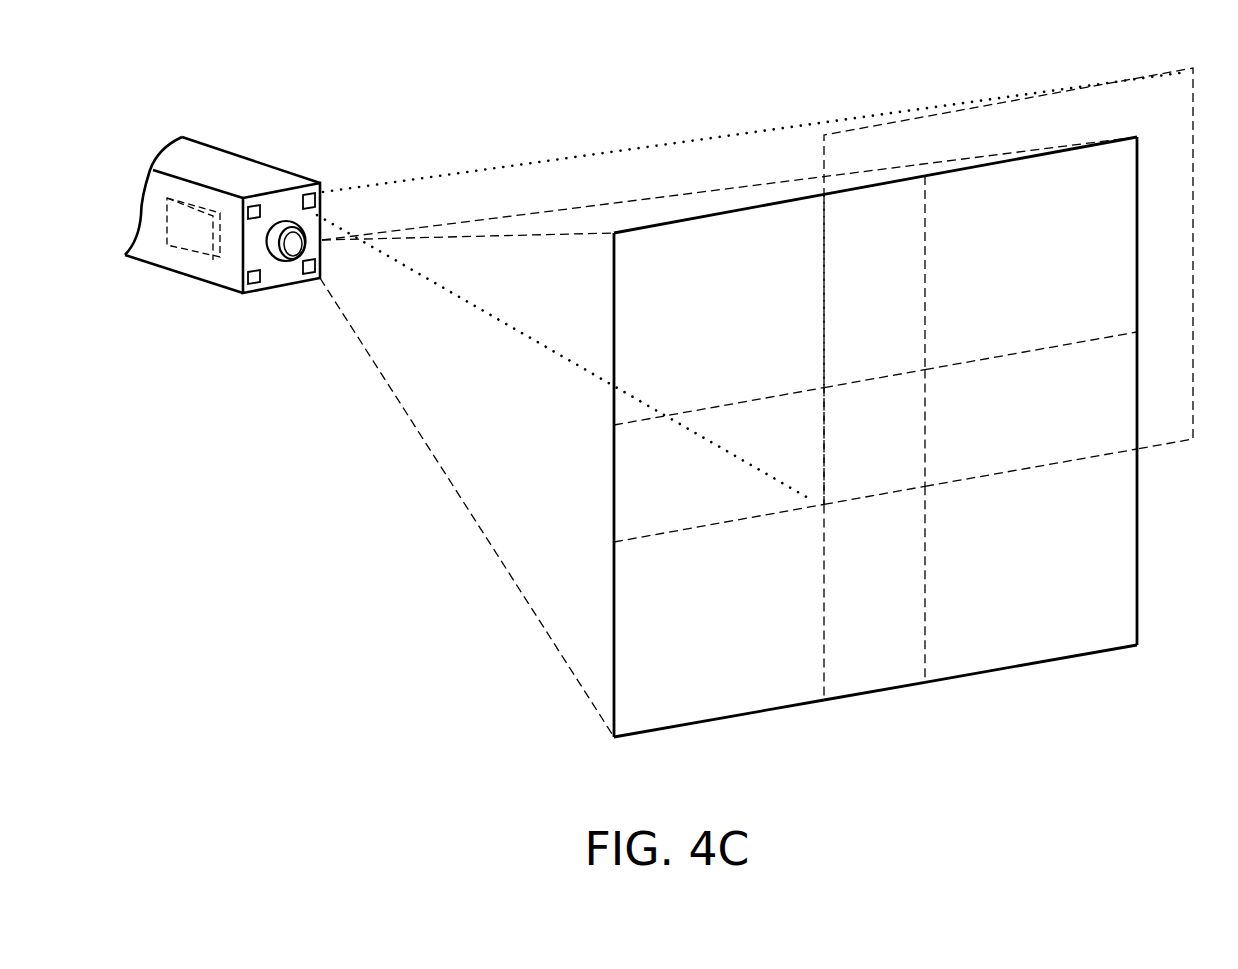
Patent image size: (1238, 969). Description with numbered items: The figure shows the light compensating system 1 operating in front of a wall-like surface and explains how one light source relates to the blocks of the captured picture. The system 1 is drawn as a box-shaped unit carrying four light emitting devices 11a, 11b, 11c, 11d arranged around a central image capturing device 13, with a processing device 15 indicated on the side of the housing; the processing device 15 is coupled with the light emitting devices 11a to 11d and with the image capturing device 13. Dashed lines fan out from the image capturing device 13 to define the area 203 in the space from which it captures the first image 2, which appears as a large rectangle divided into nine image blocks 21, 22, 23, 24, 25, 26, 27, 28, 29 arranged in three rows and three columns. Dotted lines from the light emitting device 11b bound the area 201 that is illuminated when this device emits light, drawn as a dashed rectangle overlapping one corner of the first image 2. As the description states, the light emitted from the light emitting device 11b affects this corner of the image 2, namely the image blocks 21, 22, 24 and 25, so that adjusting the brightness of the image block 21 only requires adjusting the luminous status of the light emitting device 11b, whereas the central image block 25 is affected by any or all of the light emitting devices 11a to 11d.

The light compensating system 1 is at (207, 163).
The light emitting device 11a is at (262, 208).
The light emitting device 11b is at (317, 195).
The light emitting device 11c is at (257, 283).
The light emitting device 11d is at (308, 274).
The image capturing device 13 is at (287, 246).
The processing device 15 is at (188, 228).
The first image 2 is at (1137, 540).
The image block 21 is at (1009, 272).
The image block 22 is at (859, 301).
The image block 23 is at (697, 331).
The image block 24 is at (1007, 421).
The image block 25 is at (857, 447).
The image block 26 is at (697, 487).
The image block 27 is at (1007, 574).
The image block 28 is at (857, 601).
The image block 29 is at (697, 631).
The area 201 is at (682, 140).
The area 203 is at (567, 222).